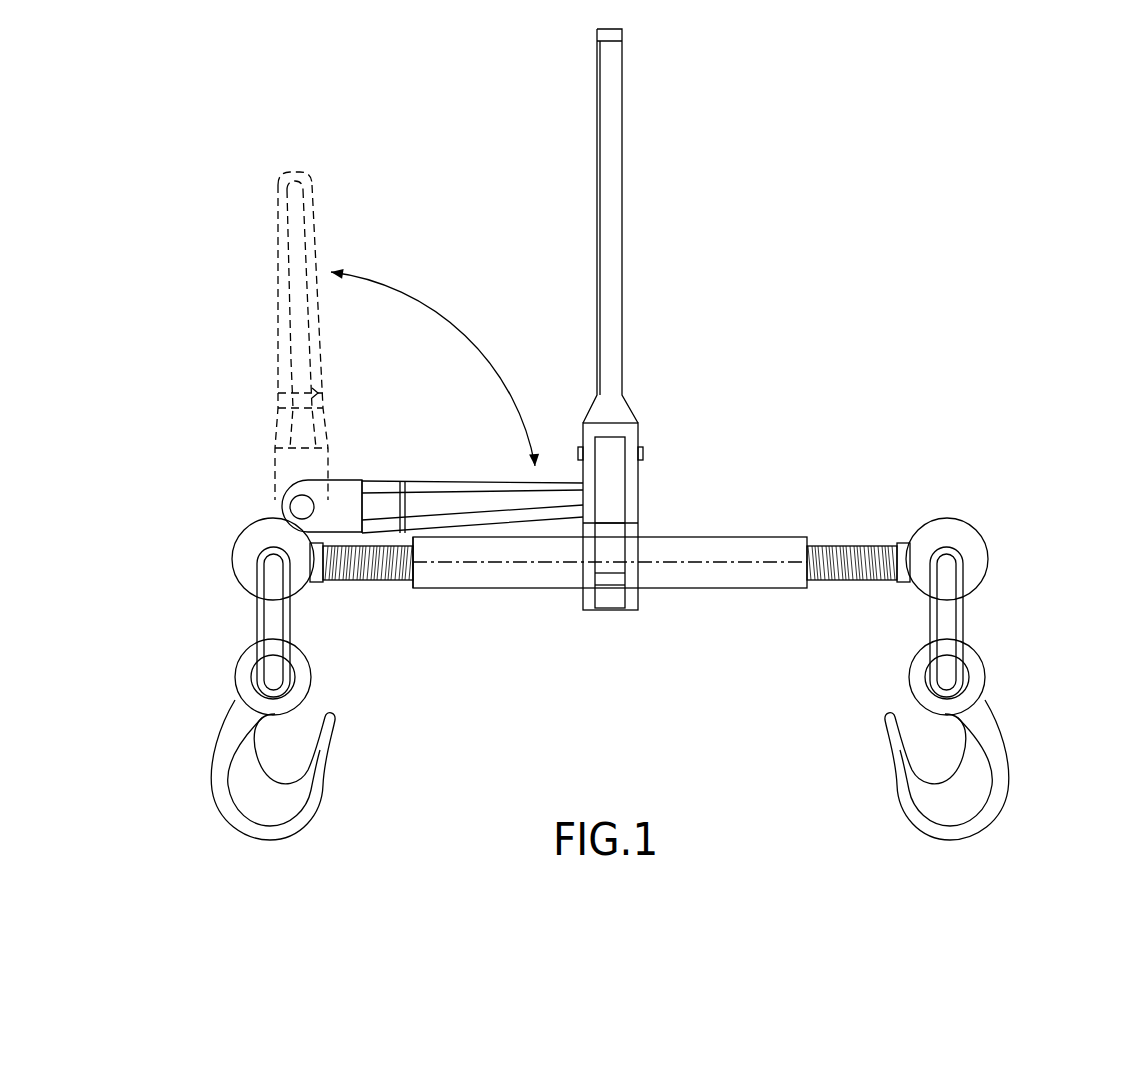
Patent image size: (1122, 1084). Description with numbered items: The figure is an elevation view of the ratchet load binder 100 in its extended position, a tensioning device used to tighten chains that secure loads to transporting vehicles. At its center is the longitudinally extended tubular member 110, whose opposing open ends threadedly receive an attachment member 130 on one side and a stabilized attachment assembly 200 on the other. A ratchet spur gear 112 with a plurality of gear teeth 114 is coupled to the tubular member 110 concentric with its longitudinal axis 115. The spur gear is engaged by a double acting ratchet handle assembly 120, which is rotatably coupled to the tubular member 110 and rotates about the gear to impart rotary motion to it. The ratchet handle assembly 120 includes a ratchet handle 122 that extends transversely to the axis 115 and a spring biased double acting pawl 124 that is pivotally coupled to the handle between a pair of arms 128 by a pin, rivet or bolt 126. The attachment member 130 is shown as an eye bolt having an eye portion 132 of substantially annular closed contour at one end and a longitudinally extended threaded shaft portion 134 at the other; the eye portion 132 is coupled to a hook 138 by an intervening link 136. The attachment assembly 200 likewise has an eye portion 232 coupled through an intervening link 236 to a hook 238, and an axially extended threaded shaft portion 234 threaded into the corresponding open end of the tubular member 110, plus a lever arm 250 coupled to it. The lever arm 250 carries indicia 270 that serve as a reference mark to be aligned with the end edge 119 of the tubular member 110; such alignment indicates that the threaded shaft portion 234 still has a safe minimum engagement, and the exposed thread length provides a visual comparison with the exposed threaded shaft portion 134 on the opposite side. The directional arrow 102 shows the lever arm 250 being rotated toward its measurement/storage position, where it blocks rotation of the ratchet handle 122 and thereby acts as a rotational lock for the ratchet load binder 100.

The ratchet load binder 100 is at (820, 154).
The directional arrow 102 is at (414, 290).
The tubular member 110 is at (773, 535).
The ratchet spur gear 112 is at (596, 567).
The gear teeth 114 is at (614, 578).
The longitudinal axis 115 is at (483, 562).
The end edge 119 is at (411, 590).
The ratchet handle assembly 120 is at (650, 265).
The ratchet handle 122 is at (623, 128).
The double acting pawl 124 is at (613, 484).
The pin, rivet or bolt 126 is at (648, 452).
The arms 128 is at (588, 446).
The attachment member 130 is at (905, 547).
The eye portion 132 is at (965, 518).
The threaded shaft portion 134 is at (843, 588).
The link 136 is at (965, 621).
The hook 138 is at (1010, 748).
The attachment assembly 200 is at (236, 462).
The eye portion 232 is at (240, 533).
The threaded shaft portion 234 is at (347, 580).
The link 236 is at (257, 622).
The hook 238 is at (214, 746).
The lever arm 250 is at (280, 218).
The indicia 270 is at (413, 517).